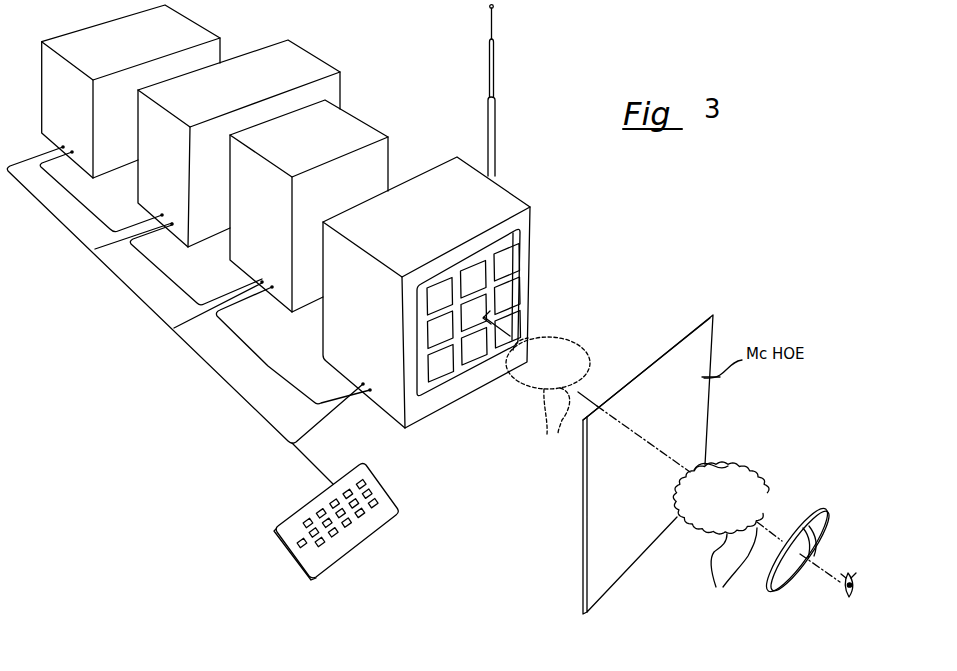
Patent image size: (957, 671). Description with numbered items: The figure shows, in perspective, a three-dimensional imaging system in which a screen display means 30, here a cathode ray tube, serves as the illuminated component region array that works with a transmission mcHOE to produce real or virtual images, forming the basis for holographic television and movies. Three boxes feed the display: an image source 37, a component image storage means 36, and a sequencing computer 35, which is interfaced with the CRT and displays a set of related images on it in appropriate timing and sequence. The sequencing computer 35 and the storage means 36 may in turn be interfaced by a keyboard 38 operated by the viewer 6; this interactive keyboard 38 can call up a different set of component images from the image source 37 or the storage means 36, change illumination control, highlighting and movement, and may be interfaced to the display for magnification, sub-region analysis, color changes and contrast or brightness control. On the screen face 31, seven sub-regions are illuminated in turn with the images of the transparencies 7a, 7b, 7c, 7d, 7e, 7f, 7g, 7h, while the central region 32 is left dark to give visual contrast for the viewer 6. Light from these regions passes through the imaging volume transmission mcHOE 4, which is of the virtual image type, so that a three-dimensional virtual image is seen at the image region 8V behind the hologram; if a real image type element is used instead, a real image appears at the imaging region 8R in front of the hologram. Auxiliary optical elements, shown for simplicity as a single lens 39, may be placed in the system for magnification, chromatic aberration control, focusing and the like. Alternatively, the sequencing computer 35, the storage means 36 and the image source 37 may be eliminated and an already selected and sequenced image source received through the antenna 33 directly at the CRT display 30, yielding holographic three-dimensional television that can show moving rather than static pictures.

The image source 37 is at (199, 33).
The component image storage means 36 is at (317, 61).
The sequencing computer 35 is at (363, 131).
The screen display means 30 is at (451, 216).
The screen face 31 is at (498, 312).
The central region 32 is at (493, 320).
The antenna 33 is at (493, 105).
The keyboard 38 is at (380, 490).
The imaging volume transmission mcHOE 4 is at (713, 327).
The image region 8V is at (568, 351).
The imaging region 8R is at (752, 472).
The lens 39 is at (824, 512).
The viewer 6 is at (851, 581).
The transparency 7a is at (441, 330).
The transparency 7b is at (440, 297).
The transparency 7c is at (474, 280).
The transparency 7d is at (507, 263).
The transparency 7e is at (508, 296).
The transparency 7f is at (508, 330).
The transparency 7g is at (475, 347).
The transparency 7h is at (441, 364).